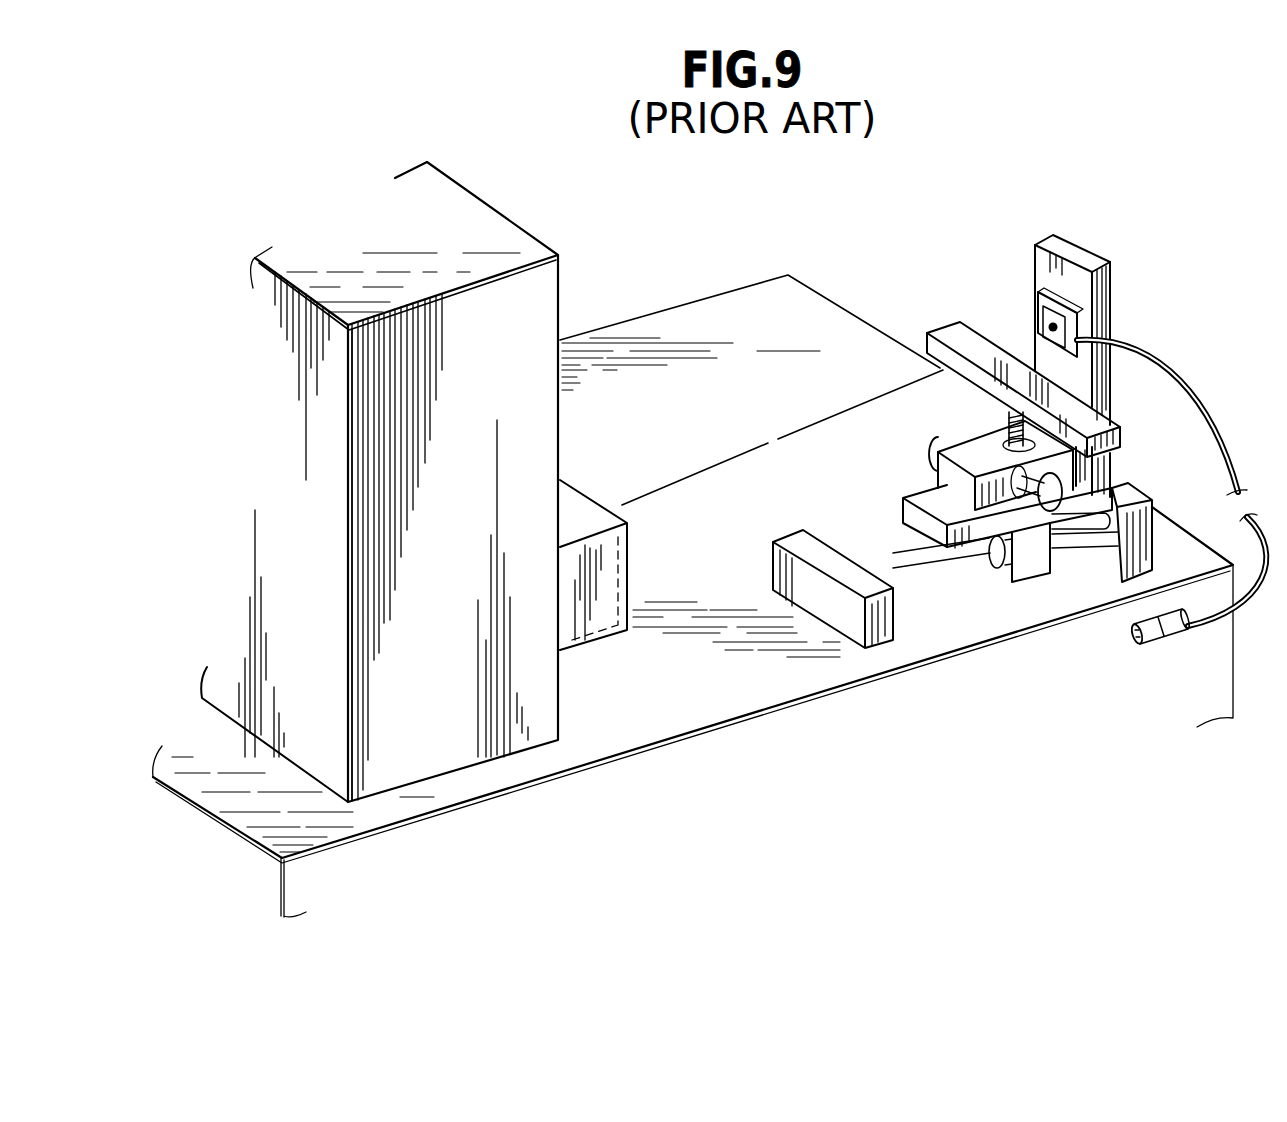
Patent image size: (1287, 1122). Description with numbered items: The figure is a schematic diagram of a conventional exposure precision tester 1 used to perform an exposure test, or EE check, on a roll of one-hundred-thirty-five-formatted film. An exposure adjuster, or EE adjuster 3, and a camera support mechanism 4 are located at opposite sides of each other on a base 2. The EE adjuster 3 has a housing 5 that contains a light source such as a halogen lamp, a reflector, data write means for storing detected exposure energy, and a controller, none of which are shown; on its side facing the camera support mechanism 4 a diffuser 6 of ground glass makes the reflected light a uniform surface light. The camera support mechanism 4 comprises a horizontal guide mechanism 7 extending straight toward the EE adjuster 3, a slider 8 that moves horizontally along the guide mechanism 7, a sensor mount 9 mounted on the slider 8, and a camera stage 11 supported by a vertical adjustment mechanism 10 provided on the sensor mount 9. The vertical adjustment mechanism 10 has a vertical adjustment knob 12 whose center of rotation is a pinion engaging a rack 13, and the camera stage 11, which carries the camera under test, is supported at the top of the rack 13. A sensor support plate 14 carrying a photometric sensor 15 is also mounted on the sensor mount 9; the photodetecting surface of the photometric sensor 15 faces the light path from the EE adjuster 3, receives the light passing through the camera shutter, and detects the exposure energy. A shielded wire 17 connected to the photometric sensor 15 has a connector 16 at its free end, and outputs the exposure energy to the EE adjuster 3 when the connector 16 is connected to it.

The exposure precision tester 1 is at (783, 247).
The base 2 is at (789, 318).
The exposure adjuster 3 is at (517, 220).
The camera support mechanism 4 is at (1132, 328).
The housing 5 is at (537, 330).
The diffuser 6 is at (595, 598).
The horizontal guide mechanism 7 is at (913, 580).
The slider 8 is at (1027, 560).
The sensor mount 9 is at (912, 512).
The vertical adjustment mechanism 10 is at (950, 485).
The camera stage 11 is at (950, 333).
The vertical adjustment knob 12 is at (930, 452).
The rack 13 is at (1005, 420).
The sensor support plate 14 is at (1070, 312).
The photometric sensor 15 is at (1037, 308).
The connector 16 is at (1163, 630).
The shielded wire 17 is at (1192, 393).